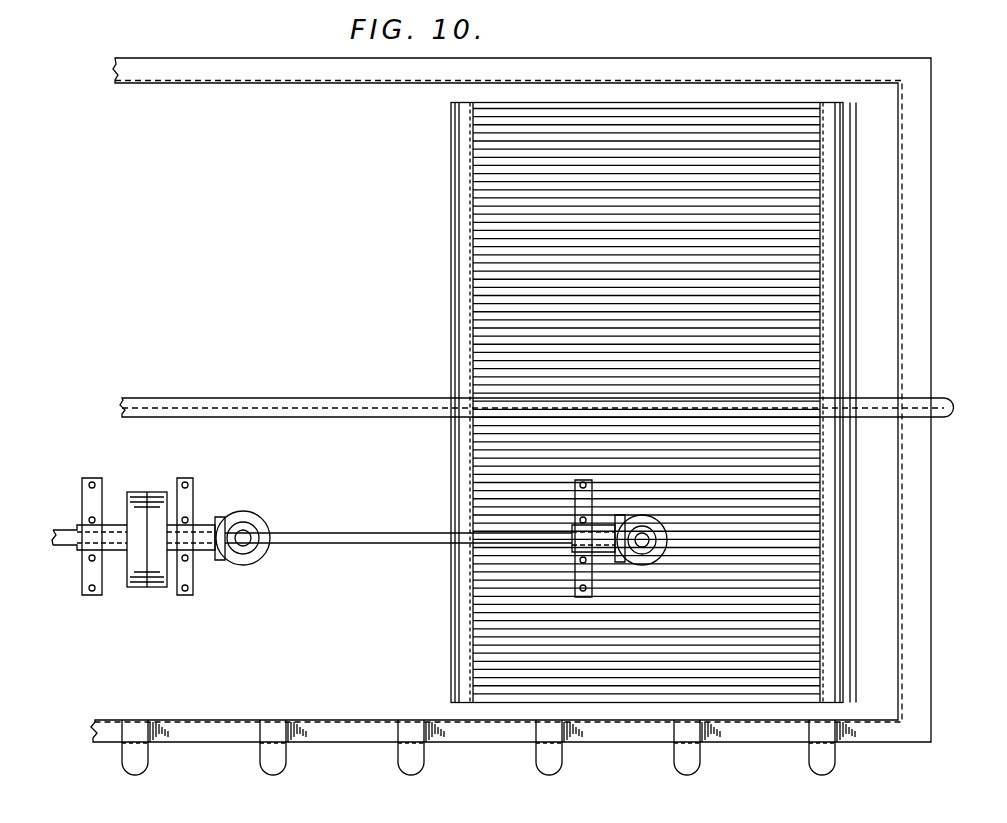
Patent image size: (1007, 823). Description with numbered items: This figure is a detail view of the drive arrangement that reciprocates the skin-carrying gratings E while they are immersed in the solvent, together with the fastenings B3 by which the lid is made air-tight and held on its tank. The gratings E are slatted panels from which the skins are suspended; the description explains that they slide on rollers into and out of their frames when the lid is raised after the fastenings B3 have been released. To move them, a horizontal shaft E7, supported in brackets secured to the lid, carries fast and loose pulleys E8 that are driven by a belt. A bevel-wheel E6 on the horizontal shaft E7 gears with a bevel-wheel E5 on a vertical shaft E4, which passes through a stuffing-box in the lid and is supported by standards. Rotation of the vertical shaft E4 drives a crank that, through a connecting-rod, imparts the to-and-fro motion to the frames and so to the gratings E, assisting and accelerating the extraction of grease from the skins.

The grating E is at (815, 198).
The fastening B3 is at (962, 383).
The vertical shaft E4 is at (241, 537).
The bevel-wheel E5 is at (259, 558).
The bevel-wheel E6 is at (623, 562).
The horizontal shaft E7 is at (365, 534).
The fast and loose pulleys E8 is at (150, 481).